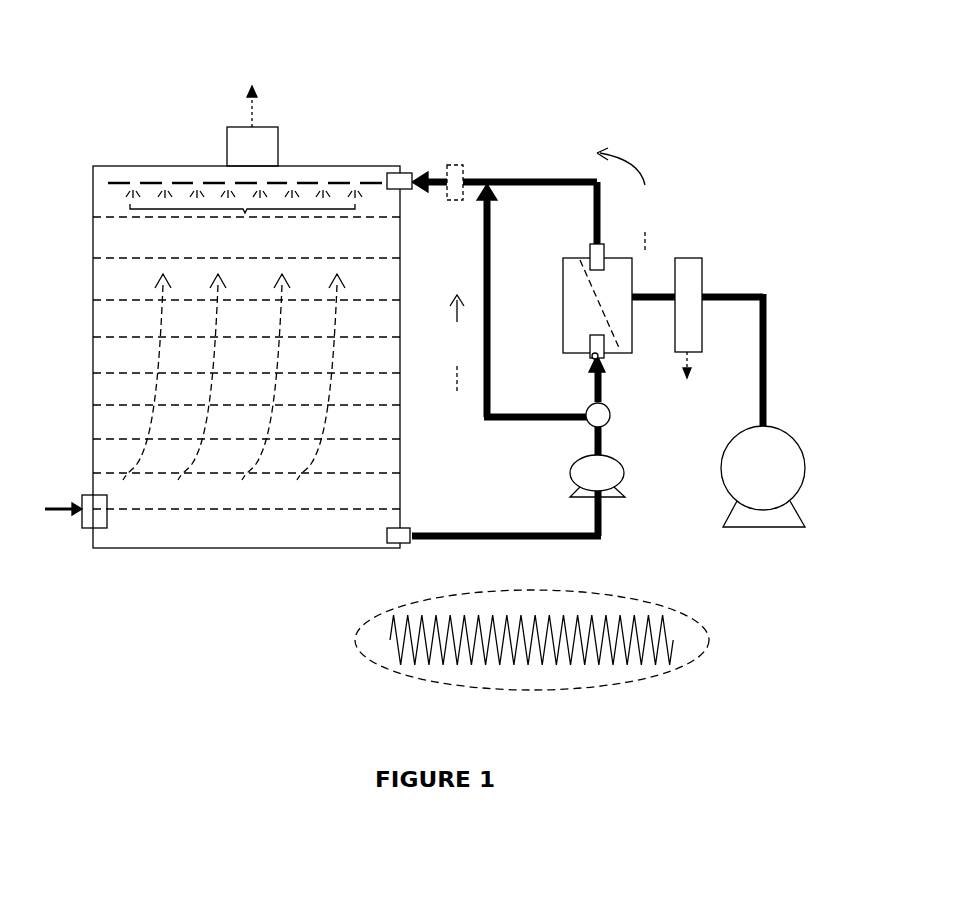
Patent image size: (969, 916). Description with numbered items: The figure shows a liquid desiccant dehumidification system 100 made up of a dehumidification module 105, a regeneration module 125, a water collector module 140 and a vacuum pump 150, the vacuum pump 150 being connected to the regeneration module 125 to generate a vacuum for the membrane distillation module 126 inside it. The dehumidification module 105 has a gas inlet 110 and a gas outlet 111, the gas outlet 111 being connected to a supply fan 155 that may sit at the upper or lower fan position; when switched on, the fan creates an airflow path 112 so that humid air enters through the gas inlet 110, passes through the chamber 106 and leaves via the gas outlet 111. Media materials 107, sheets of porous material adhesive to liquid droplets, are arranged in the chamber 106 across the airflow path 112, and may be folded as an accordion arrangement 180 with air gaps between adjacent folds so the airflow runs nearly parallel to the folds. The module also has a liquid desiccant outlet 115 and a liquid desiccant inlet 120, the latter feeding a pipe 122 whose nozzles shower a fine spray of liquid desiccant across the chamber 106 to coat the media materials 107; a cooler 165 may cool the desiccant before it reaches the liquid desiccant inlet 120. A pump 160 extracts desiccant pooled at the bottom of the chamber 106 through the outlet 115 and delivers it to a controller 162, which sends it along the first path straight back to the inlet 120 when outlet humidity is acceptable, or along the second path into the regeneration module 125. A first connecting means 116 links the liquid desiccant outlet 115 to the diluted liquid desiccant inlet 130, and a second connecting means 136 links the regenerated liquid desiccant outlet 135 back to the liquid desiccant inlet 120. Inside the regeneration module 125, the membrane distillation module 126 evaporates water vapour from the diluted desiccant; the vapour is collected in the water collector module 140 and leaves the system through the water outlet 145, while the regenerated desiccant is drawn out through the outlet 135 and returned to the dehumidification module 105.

The liquid desiccant dehumidification system 100 is at (730, 70).
The dehumidification module 105 is at (152, 165).
The chamber 106 is at (263, 367).
The media materials 107 is at (107, 372).
The gas inlet 110 is at (80, 492).
The gas outlet 111 is at (250, 85).
The airflow path 112 is at (327, 482).
The liquid desiccant outlet 115 is at (400, 607).
The first connecting means 116 is at (602, 532).
The liquid desiccant inlet 120 is at (404, 168).
The pipe 122 is at (245, 214).
The regeneration module 125 is at (562, 340).
The membrane distillation module 126 is at (595, 297).
The diluted liquid desiccant inlet 130 is at (587, 356).
The regenerated liquid desiccant outlet 135 is at (591, 249).
The second connecting means 136 is at (540, 178).
The water collector module 140 is at (697, 283).
The water outlet 145 is at (697, 380).
The vacuum pump 150 is at (790, 425).
The supply fan 155 is at (273, 142).
The pump 160 is at (622, 463).
The controller 162 is at (587, 423).
The cooler 165 is at (465, 162).
The accordion arrangement 180 is at (660, 657).